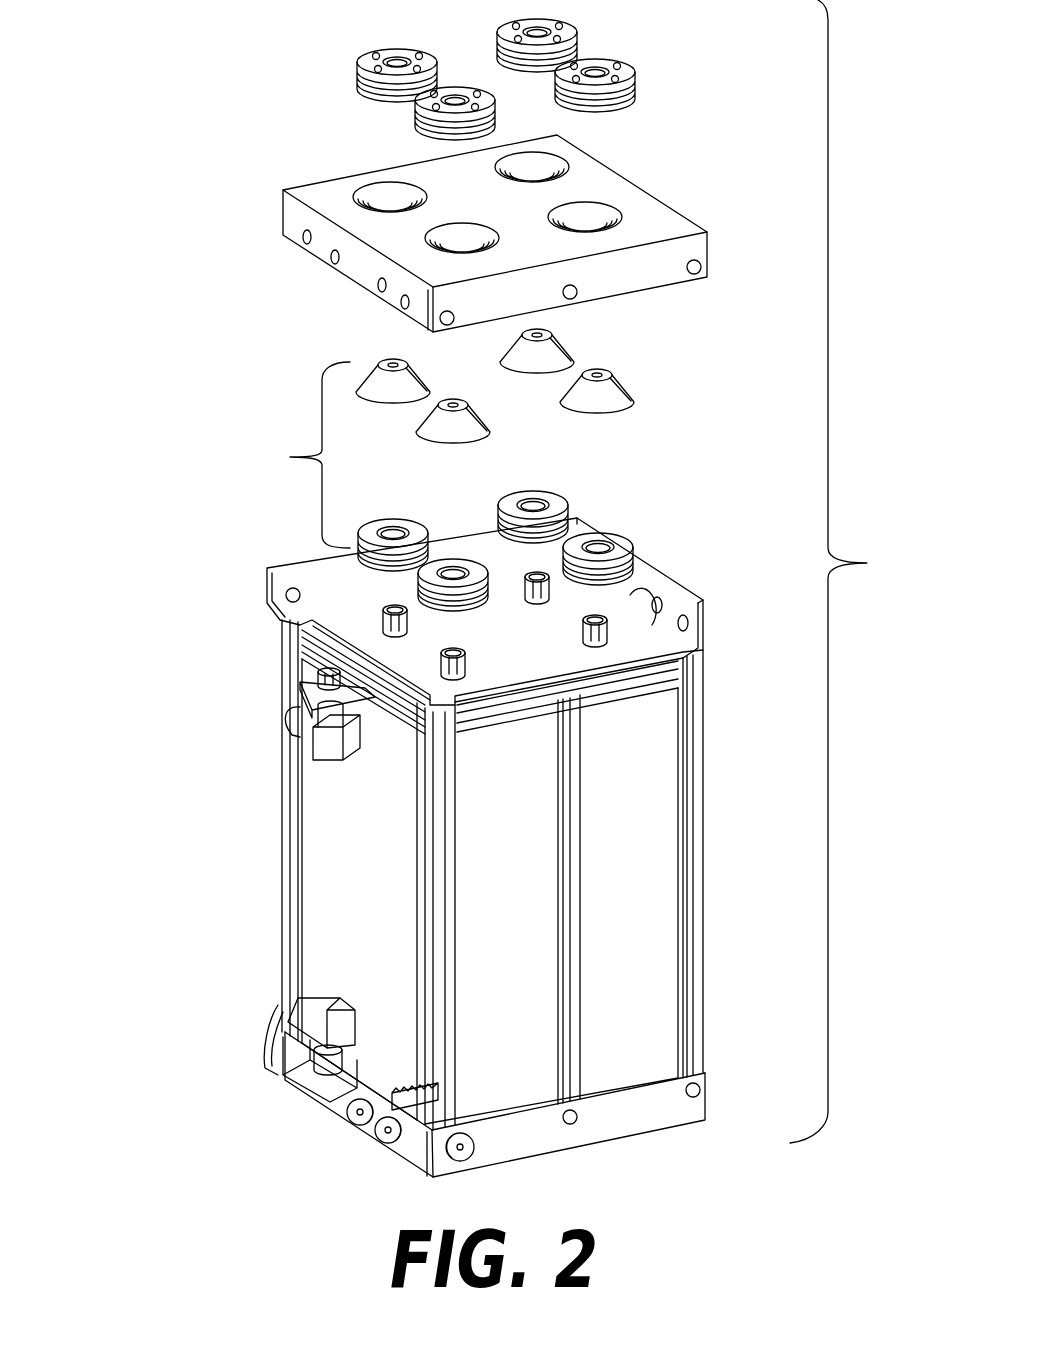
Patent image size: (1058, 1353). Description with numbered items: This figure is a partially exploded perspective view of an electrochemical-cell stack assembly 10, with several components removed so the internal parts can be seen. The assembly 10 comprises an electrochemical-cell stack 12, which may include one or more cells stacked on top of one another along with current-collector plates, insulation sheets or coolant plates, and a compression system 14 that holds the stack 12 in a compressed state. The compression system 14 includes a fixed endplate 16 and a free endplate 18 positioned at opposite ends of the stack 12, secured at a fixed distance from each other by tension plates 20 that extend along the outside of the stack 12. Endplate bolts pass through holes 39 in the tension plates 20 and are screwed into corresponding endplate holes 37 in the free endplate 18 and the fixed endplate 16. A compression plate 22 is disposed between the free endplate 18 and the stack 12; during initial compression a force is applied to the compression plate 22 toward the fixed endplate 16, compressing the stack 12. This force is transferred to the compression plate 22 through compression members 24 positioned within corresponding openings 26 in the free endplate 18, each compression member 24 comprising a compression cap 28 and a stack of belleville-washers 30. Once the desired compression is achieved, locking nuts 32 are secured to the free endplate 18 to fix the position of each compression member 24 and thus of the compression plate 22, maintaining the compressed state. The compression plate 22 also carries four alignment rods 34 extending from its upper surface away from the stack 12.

The electrochemical-cell stack assembly 10 is at (110, 146).
The electrochemical-cell stack 12 is at (373, 883).
The compression system 14 is at (847, 571).
The fixed endplate 16 is at (338, 1103).
The free endplate 18 is at (283, 215).
The tension plates 20 is at (272, 612).
The compression plate 22 is at (327, 637).
The compression members 24 is at (300, 455).
The openings 26 is at (420, 250).
The compression cap 28 is at (452, 382).
The belleville-washers 30 is at (543, 559).
The locking nuts 32 is at (397, 125).
The alignment rods 34 is at (430, 622).
The endplate holes 37 is at (294, 250).
The holes 39 is at (299, 583).